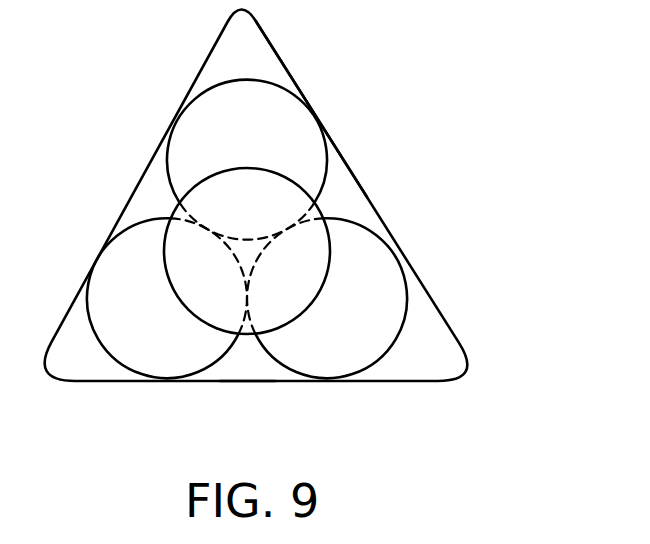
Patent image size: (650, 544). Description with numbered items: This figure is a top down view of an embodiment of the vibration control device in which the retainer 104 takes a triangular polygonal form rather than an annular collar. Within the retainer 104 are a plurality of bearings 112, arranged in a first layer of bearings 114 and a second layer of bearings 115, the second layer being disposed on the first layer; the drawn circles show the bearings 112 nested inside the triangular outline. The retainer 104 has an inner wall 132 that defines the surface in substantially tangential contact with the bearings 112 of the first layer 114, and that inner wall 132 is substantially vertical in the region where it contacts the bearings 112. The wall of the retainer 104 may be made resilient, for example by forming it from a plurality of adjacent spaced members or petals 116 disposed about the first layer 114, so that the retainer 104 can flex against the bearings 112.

The retainer 104 is at (366, 199).
The bearings 112 is at (308, 131).
The first layer of bearings 114 is at (403, 325).
The second layer of bearings 115 is at (340, 250).
The petals 116 is at (287, 62).
The inner wall 132 is at (238, 363).